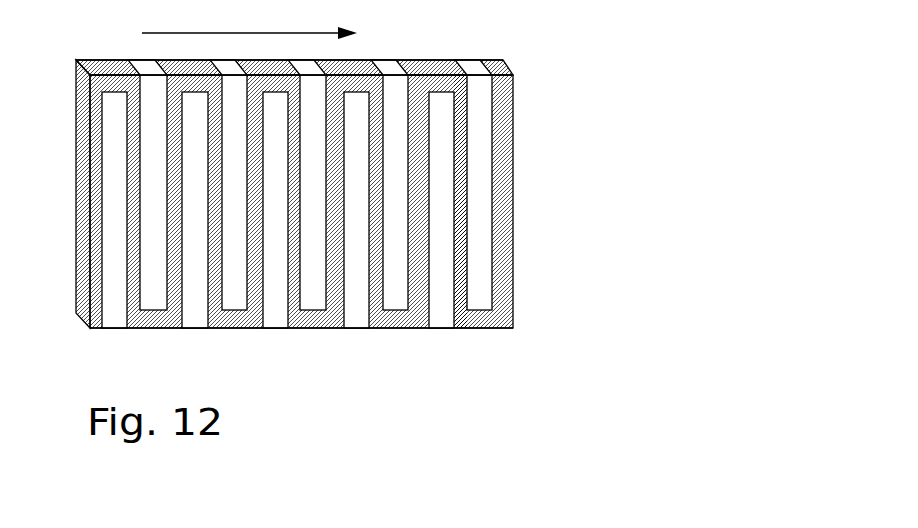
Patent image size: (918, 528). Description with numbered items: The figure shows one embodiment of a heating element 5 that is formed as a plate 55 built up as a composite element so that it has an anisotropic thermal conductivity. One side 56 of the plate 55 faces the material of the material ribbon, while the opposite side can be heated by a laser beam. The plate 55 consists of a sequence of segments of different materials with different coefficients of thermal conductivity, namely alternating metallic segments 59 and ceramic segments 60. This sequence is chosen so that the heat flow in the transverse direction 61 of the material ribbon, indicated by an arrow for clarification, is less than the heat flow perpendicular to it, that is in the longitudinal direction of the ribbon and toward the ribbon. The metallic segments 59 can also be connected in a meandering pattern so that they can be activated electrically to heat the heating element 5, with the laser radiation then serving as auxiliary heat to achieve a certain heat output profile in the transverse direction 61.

The heating element 5 is at (431, 200).
The plate 55 is at (431, 200).
The one side 56 is at (458, 289).
The metallic segments 59 is at (462, 117).
The ceramic segments 60 is at (357, 108).
The transverse direction 61 is at (249, 19).